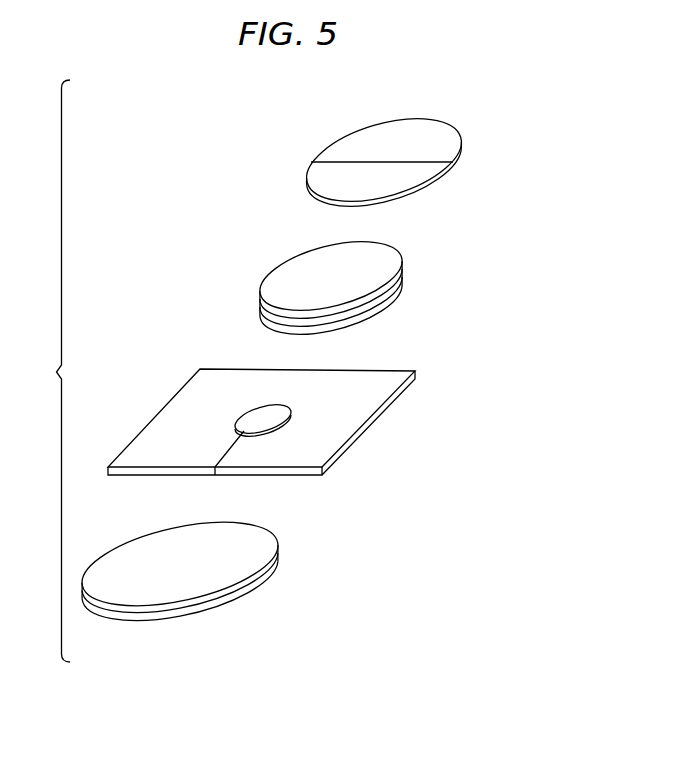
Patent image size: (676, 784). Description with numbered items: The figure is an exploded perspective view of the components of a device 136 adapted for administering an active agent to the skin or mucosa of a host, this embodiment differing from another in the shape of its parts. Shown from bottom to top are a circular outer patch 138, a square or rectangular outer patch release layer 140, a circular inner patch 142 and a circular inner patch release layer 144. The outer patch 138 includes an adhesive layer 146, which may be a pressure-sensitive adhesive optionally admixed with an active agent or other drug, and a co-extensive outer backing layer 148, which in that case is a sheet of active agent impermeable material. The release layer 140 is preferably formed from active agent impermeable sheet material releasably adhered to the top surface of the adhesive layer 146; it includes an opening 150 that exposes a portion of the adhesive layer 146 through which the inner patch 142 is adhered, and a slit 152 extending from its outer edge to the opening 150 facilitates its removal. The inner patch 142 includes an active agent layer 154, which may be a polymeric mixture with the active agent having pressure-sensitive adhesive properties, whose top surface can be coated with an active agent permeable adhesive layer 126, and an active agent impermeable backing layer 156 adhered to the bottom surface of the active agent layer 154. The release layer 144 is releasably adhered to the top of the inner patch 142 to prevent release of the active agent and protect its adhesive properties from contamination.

The device 136 is at (48, 371).
The inner patch release layer 144 is at (465, 130).
The inner patch 142 is at (348, 291).
The active agent permeable adhesive layer 126 is at (403, 255).
The active agent layer 154 is at (262, 312).
The active agent impermeable backing layer 156 is at (262, 326).
The outer patch release layer 140 is at (281, 436).
The opening 150 is at (255, 428).
The slit 152 is at (233, 450).
The outer patch 138 is at (217, 578).
The adhesive layer 146 is at (260, 588).
The outer backing layer 148 is at (227, 607).